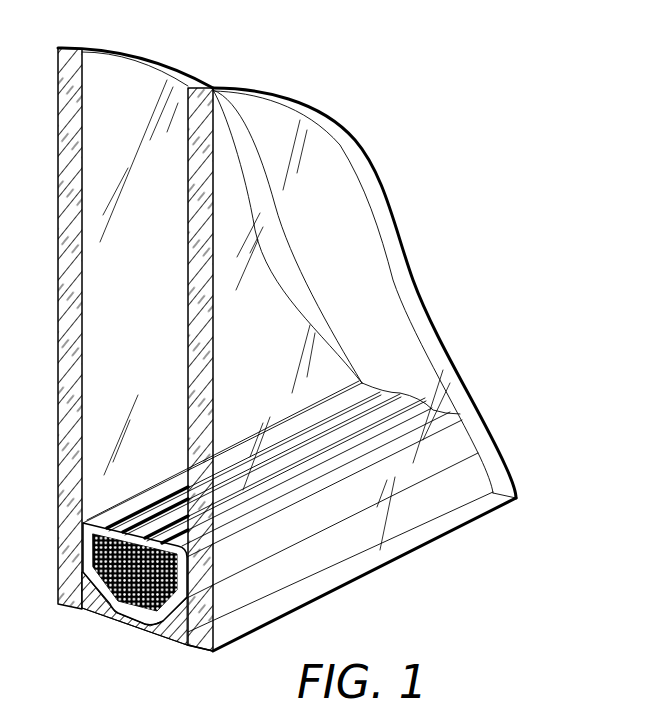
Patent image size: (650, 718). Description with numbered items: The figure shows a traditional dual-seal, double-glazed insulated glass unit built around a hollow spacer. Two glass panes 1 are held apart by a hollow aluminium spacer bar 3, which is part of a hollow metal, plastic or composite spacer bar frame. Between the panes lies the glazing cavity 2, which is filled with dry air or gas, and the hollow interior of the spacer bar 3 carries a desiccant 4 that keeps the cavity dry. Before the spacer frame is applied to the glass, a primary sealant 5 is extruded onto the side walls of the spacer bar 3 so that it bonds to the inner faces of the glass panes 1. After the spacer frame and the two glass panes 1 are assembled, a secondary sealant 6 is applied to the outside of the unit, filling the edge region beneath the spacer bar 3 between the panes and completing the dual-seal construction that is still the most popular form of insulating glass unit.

The glass panes 1 is at (130, 78).
The glazing cavity 2 is at (113, 153).
The hollow aluminium spacer bar 3 is at (147, 512).
The desiccant 4 is at (112, 596).
The primary sealant 5 is at (458, 447).
The secondary sealant 6 is at (172, 628).